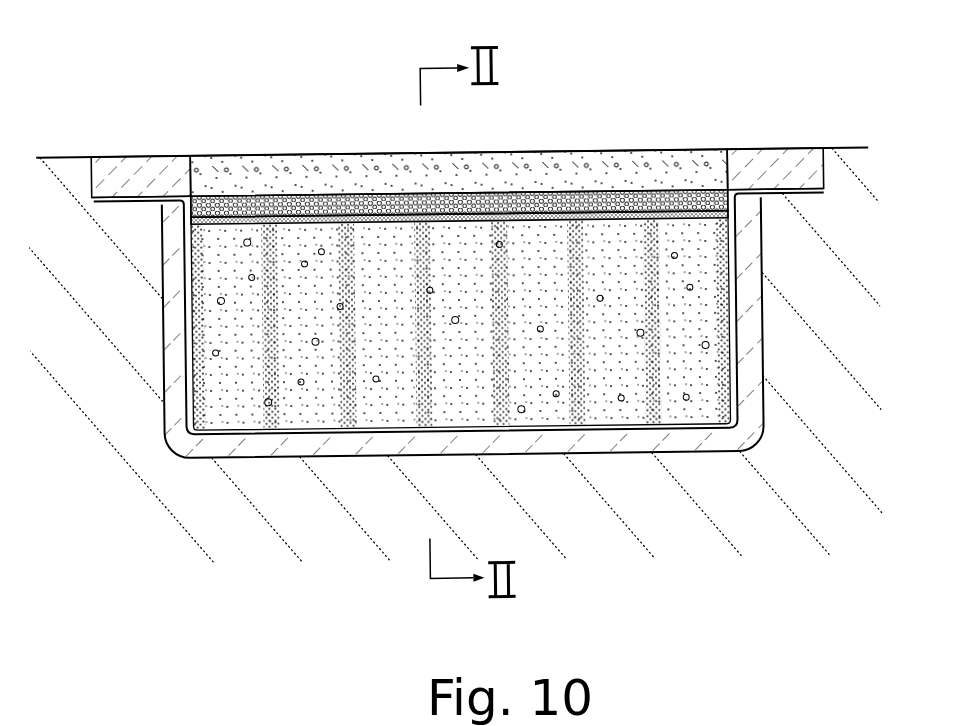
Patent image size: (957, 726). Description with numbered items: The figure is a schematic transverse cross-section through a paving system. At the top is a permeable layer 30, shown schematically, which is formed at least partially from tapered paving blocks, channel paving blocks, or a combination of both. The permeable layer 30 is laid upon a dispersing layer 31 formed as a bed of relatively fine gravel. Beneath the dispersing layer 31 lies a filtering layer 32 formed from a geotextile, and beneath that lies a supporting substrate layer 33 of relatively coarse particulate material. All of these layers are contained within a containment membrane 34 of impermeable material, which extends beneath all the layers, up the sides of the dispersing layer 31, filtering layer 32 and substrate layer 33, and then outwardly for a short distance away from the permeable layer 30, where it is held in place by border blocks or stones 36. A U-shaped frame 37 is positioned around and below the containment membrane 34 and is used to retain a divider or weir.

The permeable layer 30 is at (312, 168).
The dispersing layer 31 is at (515, 192).
The filtering layer 32 is at (598, 192).
The supporting substrate layer 33 is at (690, 312).
The containment membrane 34 is at (738, 348).
The border blocks or stones 36 is at (150, 168).
The U-shaped frame 37 is at (690, 442).